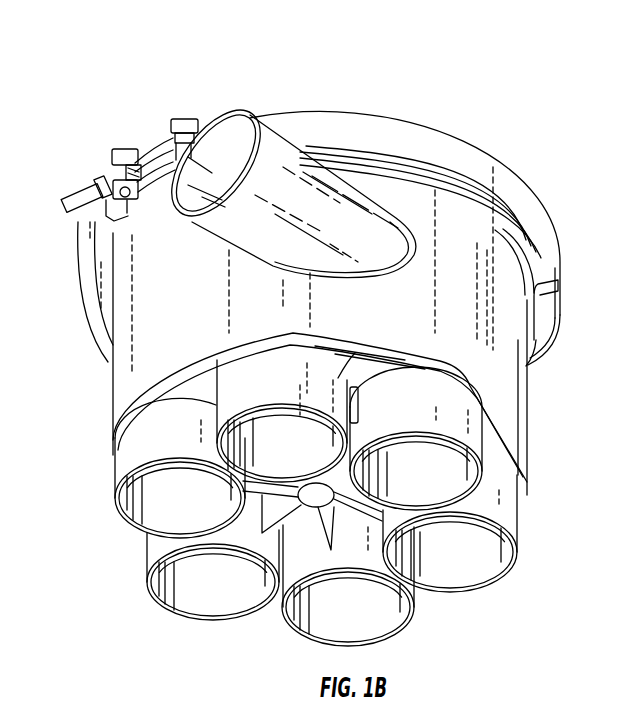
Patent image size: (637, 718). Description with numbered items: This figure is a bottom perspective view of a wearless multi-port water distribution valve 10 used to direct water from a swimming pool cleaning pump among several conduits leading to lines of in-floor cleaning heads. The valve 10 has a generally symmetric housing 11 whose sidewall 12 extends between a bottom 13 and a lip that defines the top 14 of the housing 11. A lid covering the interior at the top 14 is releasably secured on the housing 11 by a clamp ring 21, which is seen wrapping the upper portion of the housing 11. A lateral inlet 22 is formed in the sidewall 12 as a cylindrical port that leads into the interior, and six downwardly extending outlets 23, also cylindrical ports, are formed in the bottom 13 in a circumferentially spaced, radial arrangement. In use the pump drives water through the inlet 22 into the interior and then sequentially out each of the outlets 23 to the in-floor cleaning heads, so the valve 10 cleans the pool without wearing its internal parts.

The wearless multi-port water distribution valve 10 is at (578, 91).
The housing 11 is at (553, 336).
The sidewall 12 is at (524, 383).
The bottom 13 is at (524, 476).
The top 14 is at (548, 200).
The clamp ring 21 is at (77, 182).
The lateral inlet 22 is at (273, 143).
The outlets 23 is at (417, 393).